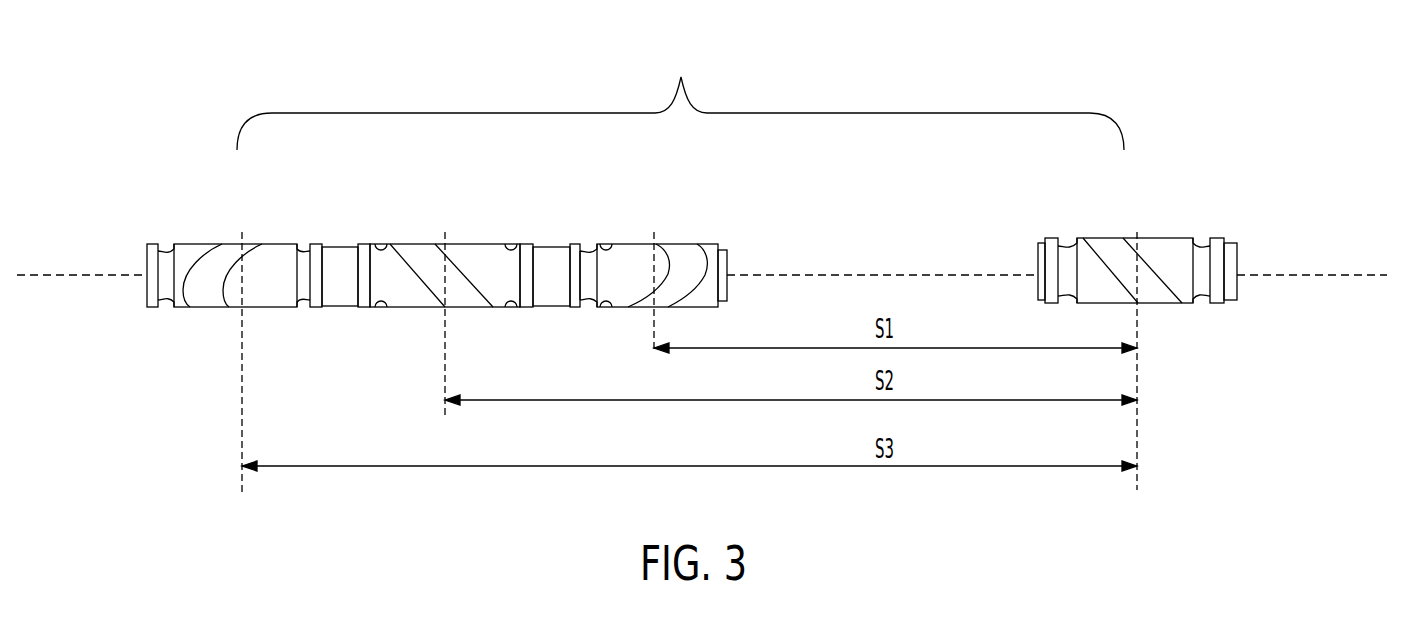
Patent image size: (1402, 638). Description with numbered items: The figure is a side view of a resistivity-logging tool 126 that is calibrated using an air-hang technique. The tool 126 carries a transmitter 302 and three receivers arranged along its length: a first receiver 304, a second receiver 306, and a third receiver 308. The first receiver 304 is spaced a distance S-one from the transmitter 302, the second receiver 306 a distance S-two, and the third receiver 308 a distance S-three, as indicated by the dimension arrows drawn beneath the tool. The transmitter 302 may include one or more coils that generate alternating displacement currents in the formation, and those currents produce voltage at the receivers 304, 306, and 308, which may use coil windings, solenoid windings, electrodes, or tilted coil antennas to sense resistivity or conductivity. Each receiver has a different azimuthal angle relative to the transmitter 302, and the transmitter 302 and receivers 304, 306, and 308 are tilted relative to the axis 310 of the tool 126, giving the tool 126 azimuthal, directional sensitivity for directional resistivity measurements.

The resistivity-logging tool 126 is at (680, 95).
The transmitter 302 is at (1165, 238).
The first receiver 304 is at (684, 244).
The second receiver 306 is at (482, 244).
The third receiver 308 is at (250, 244).
The axis 310 is at (1301, 272).